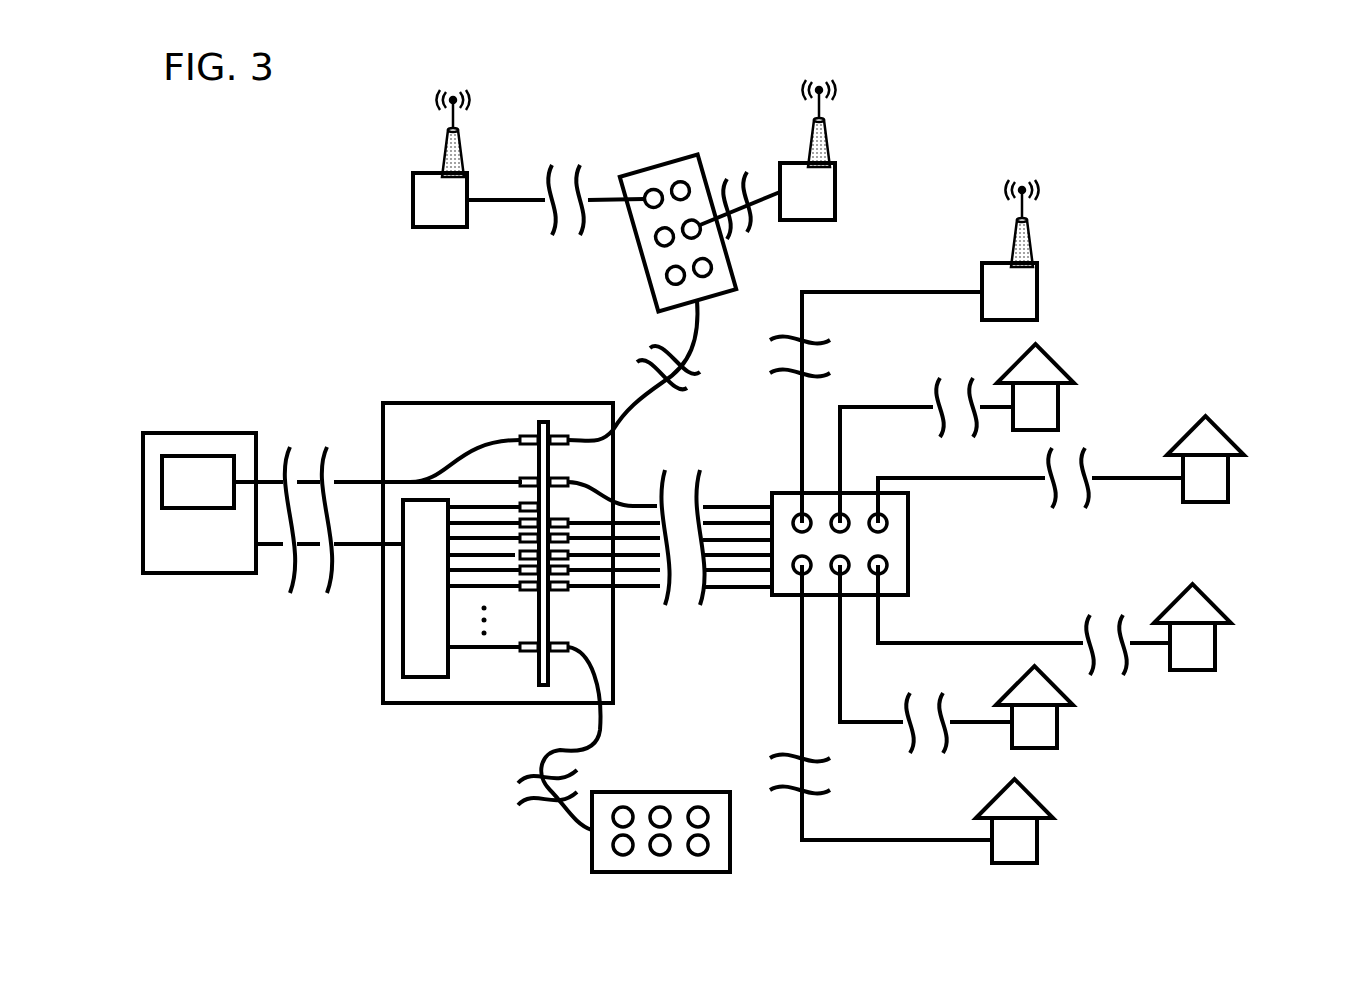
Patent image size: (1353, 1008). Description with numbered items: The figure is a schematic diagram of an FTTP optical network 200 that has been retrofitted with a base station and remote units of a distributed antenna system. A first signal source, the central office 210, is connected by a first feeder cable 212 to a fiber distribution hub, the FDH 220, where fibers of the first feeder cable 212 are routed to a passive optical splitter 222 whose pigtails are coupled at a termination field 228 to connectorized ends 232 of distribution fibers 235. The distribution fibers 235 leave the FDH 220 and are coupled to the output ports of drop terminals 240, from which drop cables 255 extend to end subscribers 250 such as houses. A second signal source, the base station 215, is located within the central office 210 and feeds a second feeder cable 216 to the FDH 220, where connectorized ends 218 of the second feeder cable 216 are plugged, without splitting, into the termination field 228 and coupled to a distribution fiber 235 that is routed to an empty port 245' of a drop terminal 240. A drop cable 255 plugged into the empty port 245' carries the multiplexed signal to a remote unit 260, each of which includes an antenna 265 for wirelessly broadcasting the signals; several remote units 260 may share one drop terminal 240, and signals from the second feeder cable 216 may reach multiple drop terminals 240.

The optical network 200 is at (1228, 320).
The first signal source 210 is at (199, 503).
The second signal source 215 is at (198, 482).
The second feeder cable 216 is at (358, 477).
The first feeder cable 212 is at (358, 550).
The FDH 220 is at (442, 402).
The passive optical splitter 222 is at (430, 677).
The connectorized ends of the second feeder cable 218 is at (543, 423).
The termination field 228 is at (530, 437).
The connectorized ends of the distribution fibers 232 is at (562, 593).
The distribution fibers 235 is at (638, 398).
The drop terminal 240 is at (658, 168).
The empty port 245' is at (799, 512).
The end subscribers 250 is at (1060, 403).
The drop cable 255 is at (930, 292).
The remote unit 260 is at (413, 200).
The antenna 265 is at (442, 153).